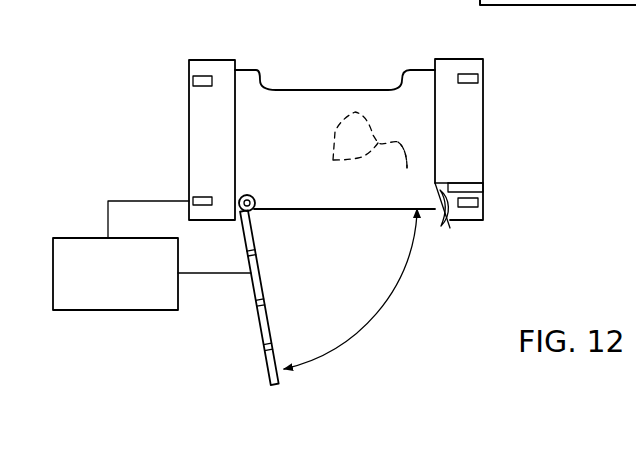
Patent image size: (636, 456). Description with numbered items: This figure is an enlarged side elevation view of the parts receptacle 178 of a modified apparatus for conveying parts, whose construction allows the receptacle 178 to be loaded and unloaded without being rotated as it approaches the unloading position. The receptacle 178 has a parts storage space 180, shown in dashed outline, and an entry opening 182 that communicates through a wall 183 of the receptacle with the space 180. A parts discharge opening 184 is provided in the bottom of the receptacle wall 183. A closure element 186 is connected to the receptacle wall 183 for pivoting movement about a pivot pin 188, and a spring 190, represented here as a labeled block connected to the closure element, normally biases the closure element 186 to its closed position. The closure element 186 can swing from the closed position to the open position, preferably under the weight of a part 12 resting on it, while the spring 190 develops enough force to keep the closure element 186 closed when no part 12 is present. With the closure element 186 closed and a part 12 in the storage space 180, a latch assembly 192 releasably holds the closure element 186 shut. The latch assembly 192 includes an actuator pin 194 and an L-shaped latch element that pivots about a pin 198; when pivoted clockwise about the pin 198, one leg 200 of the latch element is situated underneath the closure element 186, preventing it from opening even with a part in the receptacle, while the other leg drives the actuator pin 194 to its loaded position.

The part 12 is at (407, 169).
The parts receptacle 178 is at (463, 59).
The parts storage space 180 is at (313, 140).
The entry opening 182 is at (287, 88).
The wall 183 is at (383, 97).
The parts discharge opening 184 is at (347, 212).
The closure element 186 is at (270, 323).
The pivot pin 188 is at (256, 201).
The spring 190 is at (103, 298).
The latch assembly 192 is at (500, 184).
The actuator pin 194 is at (463, 190).
The pin 198 is at (430, 213).
The leg 200 is at (447, 222).